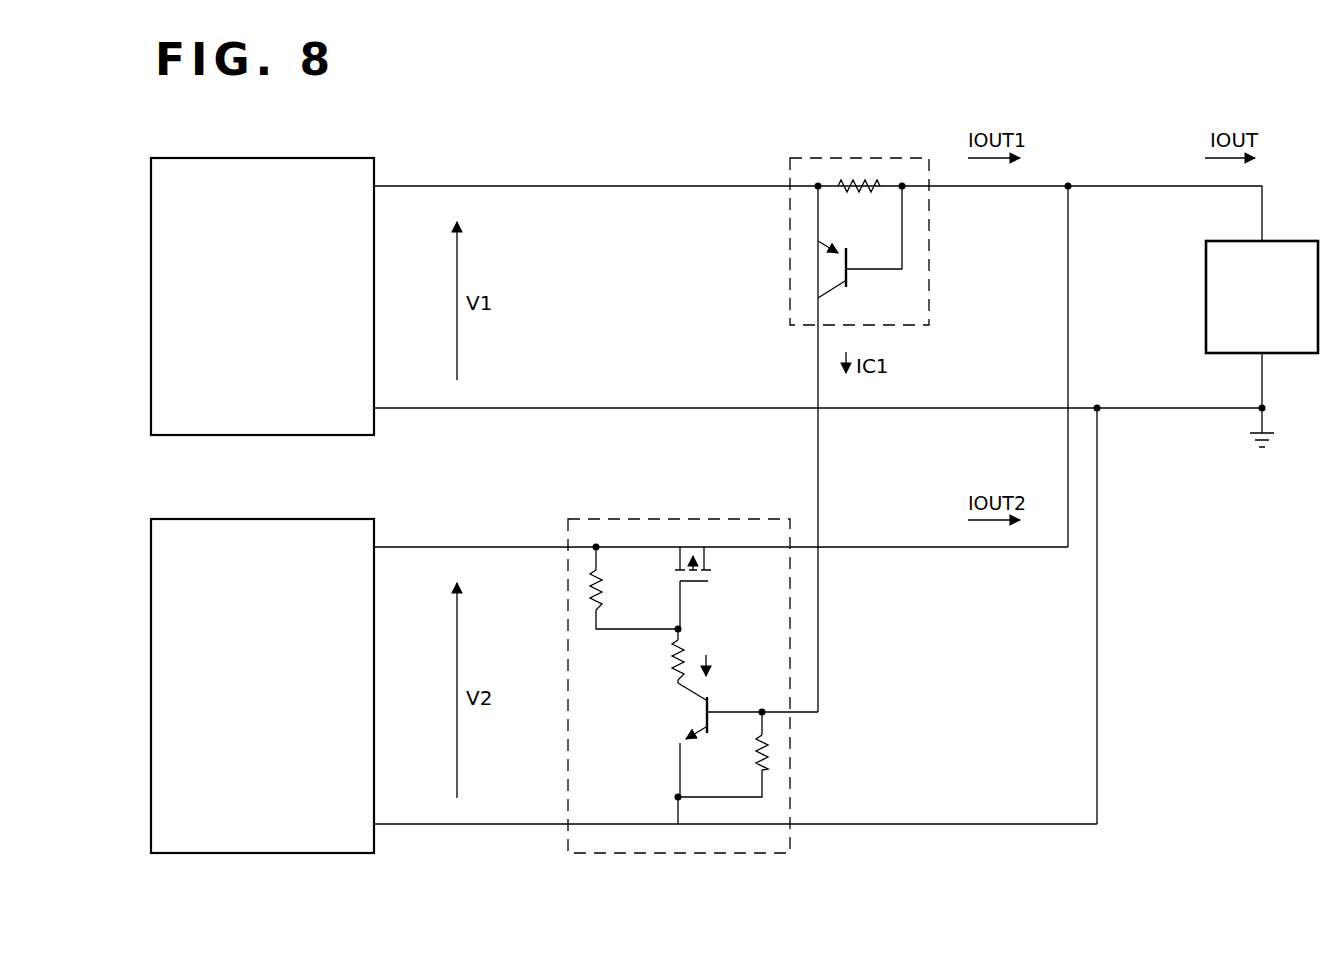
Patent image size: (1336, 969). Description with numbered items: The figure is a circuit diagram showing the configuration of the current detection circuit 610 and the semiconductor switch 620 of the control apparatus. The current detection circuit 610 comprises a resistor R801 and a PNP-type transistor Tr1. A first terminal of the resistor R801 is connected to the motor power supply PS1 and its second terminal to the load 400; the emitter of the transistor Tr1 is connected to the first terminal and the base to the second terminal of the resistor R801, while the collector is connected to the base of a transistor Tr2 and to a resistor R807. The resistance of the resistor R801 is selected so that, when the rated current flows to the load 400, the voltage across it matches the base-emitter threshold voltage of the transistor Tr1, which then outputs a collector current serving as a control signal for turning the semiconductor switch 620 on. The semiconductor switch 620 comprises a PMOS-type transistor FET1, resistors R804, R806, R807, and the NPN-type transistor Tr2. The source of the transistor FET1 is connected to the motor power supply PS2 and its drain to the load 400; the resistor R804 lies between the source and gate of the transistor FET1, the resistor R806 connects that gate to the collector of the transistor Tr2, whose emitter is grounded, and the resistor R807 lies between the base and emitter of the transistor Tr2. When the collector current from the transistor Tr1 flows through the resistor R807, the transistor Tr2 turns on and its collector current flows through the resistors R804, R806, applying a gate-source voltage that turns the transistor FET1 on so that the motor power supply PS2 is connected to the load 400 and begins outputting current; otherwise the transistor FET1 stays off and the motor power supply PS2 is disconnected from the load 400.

The load 400 is at (1206, 293).
The current detection circuit 610 is at (815, 205).
The semiconductor switch 620 is at (693, 648).
The motor power supply PS1 is at (272, 158).
The motor power supply PS2 is at (272, 519).
The resistor R801 is at (860, 199).
The PNP-type transistor Tr1 is at (803, 270).
The PMOS-type transistor FET1 is at (713, 570).
The resistor R804 is at (634, 588).
The resistor R806 is at (646, 656).
The resistor R807 is at (723, 768).
The NPN-type transistor Tr2 is at (688, 713).